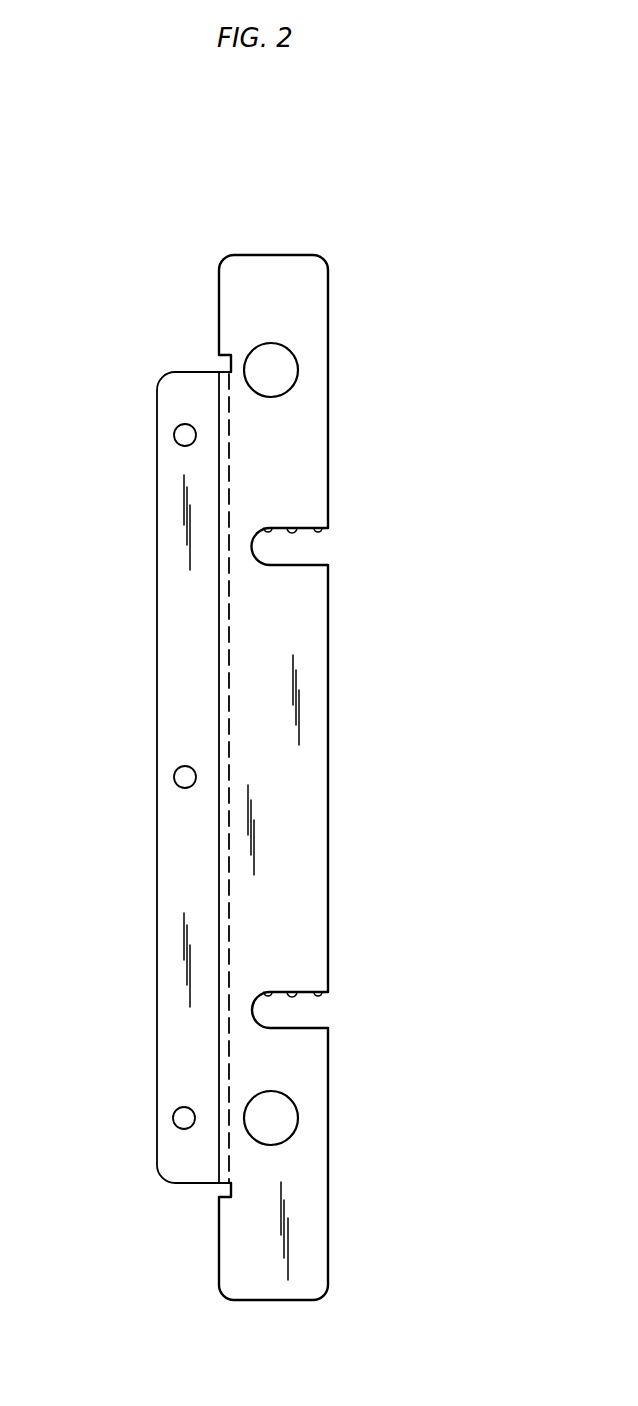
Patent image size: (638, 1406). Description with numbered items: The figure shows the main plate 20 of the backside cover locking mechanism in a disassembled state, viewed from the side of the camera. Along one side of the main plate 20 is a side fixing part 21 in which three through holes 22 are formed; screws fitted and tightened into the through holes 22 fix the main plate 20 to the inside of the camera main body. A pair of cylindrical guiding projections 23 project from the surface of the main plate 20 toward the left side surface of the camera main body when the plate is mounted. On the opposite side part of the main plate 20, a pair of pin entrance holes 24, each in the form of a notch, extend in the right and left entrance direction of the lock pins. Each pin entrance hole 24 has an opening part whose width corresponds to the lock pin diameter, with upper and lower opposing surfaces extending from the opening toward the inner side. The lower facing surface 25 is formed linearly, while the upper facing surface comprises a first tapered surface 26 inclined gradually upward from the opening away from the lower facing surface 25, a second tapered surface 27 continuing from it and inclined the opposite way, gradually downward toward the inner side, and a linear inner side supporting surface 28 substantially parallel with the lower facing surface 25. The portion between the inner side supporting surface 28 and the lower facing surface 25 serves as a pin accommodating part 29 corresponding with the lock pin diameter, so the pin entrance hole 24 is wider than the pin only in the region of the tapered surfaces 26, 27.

The main plate 20 is at (315, 239).
The side fixing part 21 is at (182, 603).
The through holes 22 is at (176, 434).
The cylindrical guiding projections 23 is at (277, 368).
The pin entrance holes 24 is at (323, 549).
The lower facing surface 25 is at (308, 563).
The first tapered surface 26 is at (318, 536).
The second tapered surface 27 is at (294, 534).
The inner side supporting surface 28 is at (268, 530).
The pin accommodating part 29 is at (275, 548).